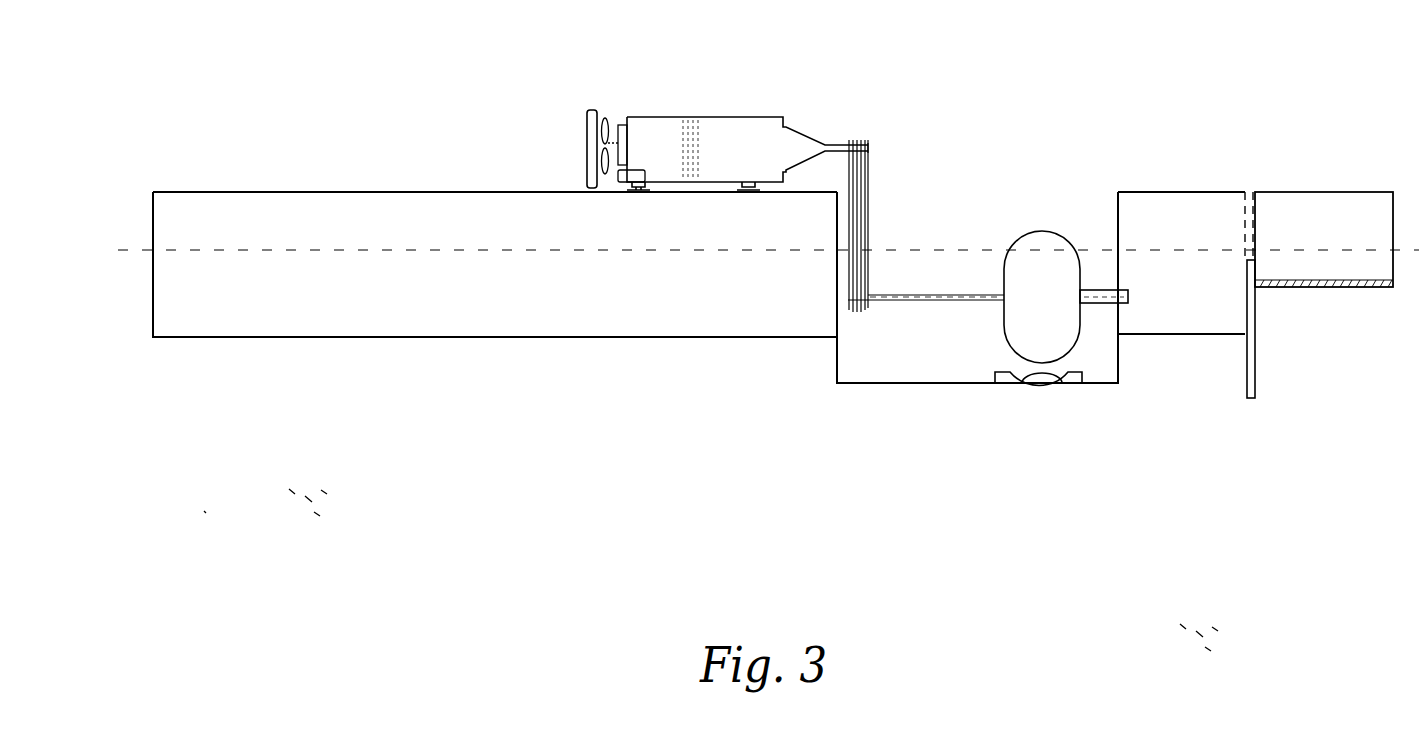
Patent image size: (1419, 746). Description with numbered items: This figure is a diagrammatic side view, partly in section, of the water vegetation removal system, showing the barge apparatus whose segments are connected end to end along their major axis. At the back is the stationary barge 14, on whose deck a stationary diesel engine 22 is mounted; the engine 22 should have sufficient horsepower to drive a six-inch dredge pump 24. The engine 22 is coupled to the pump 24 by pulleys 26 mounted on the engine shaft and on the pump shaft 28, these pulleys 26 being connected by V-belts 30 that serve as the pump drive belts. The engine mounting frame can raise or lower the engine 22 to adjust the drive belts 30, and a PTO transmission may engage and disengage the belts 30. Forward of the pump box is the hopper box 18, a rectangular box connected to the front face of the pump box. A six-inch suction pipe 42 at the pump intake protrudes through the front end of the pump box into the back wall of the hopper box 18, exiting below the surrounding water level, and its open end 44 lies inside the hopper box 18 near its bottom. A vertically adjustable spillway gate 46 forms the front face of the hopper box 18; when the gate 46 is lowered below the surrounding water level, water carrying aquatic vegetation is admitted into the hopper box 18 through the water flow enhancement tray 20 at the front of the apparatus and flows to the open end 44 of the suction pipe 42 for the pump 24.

The stationary barge 14 is at (257, 192).
The hopper box 18 is at (1180, 334).
The water flow enhancement tray 20 is at (1312, 191).
The stationary diesel engine 22 is at (728, 117).
The dredge pump 24 is at (1033, 231).
The pulleys 26 is at (868, 148).
The pump shaft 28 is at (948, 300).
The V-belts 30 is at (868, 215).
The suction pipe 42 is at (1100, 305).
The open end of pump suction line 44 is at (1128, 297).
The spillway gate 46 is at (1257, 355).